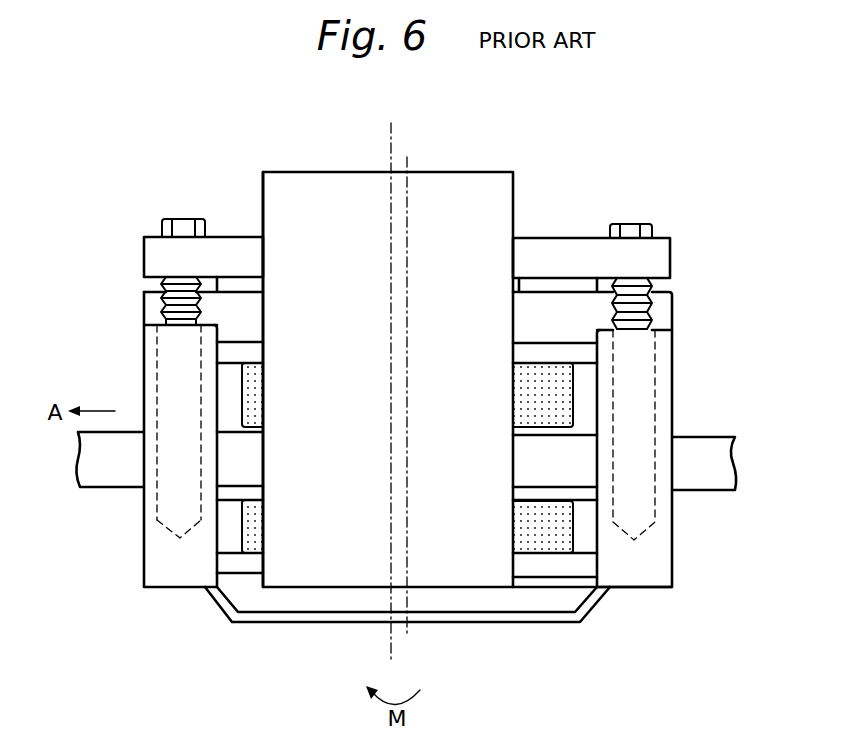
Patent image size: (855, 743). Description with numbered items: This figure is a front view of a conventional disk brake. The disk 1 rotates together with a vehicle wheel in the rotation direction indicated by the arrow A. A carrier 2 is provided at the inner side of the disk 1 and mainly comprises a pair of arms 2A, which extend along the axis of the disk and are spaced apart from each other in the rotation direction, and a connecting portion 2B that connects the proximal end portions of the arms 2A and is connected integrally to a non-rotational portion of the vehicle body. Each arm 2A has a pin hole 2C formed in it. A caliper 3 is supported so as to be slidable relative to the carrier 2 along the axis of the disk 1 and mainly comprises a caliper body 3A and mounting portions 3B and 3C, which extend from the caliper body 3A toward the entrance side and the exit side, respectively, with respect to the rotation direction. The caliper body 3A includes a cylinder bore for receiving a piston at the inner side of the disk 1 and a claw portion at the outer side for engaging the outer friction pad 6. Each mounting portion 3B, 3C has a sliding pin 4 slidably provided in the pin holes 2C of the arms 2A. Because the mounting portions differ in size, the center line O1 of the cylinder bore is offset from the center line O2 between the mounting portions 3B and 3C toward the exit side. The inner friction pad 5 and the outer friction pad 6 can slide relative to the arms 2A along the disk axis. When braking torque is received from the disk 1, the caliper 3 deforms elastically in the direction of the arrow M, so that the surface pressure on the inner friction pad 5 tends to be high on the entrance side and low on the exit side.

The disk 1 is at (727, 440).
The carrier 2 is at (672, 343).
The arms 2A is at (157, 557).
The connecting portion 2B is at (545, 305).
The pin hole 2C is at (157, 492).
The caliper 3 is at (462, 187).
The caliper body 3A is at (307, 187).
The mounting portion 3B is at (595, 250).
The mounting portion 3C is at (232, 250).
The sliding pin 4 is at (158, 355).
The friction pad 5 is at (560, 392).
The friction pad 6 is at (540, 535).
The center line of the cylinder bore O1 is at (386, 393).
The center line between the mounting portions O2 is at (411, 396).